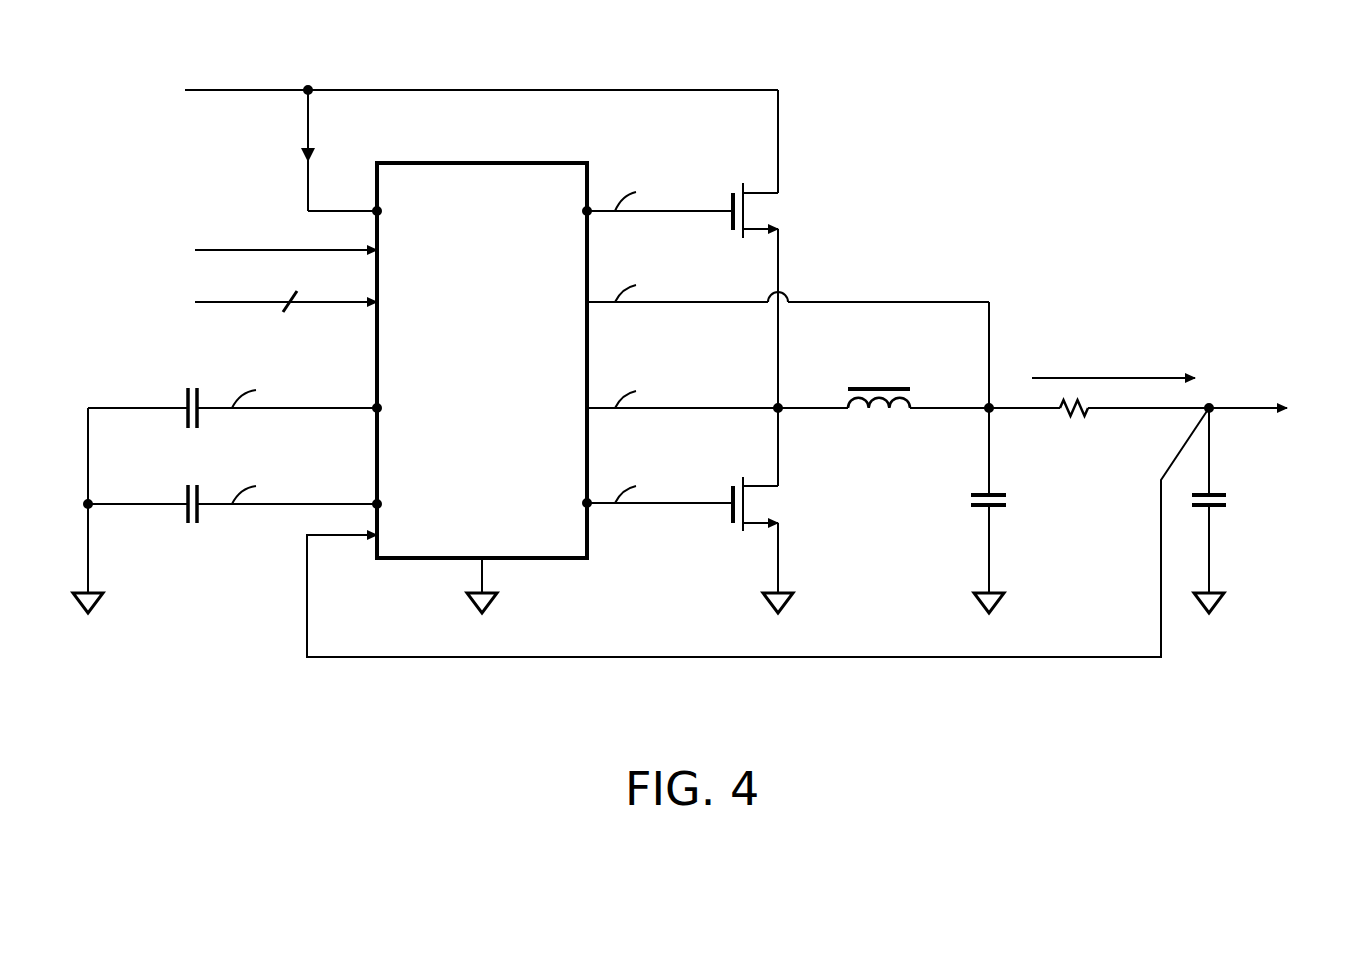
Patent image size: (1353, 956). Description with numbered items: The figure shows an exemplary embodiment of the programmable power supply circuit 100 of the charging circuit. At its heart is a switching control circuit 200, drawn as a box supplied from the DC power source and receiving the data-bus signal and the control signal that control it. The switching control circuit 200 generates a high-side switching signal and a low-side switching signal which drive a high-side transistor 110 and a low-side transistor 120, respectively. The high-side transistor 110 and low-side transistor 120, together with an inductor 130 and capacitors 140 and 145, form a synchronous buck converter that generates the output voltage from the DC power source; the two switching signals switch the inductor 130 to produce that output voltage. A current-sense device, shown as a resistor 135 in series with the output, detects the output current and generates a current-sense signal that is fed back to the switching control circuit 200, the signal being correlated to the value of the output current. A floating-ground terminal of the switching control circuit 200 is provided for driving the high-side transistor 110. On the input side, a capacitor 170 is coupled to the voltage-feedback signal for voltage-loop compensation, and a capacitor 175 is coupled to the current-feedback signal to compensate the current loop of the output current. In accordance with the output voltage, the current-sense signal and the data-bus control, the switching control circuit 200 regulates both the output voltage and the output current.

The programmable power supply circuit 100 is at (1193, 75).
The switching control circuit 200 is at (378, 163).
The high-side transistor 110 is at (758, 185).
The low-side transistor 120 is at (758, 480).
The inductor 130 is at (878, 425).
The resistor 135 is at (1077, 425).
The capacitor 140 is at (980, 510).
The capacitor 145 is at (1215, 513).
The capacitor 170 is at (193, 385).
The capacitor 175 is at (193, 480).